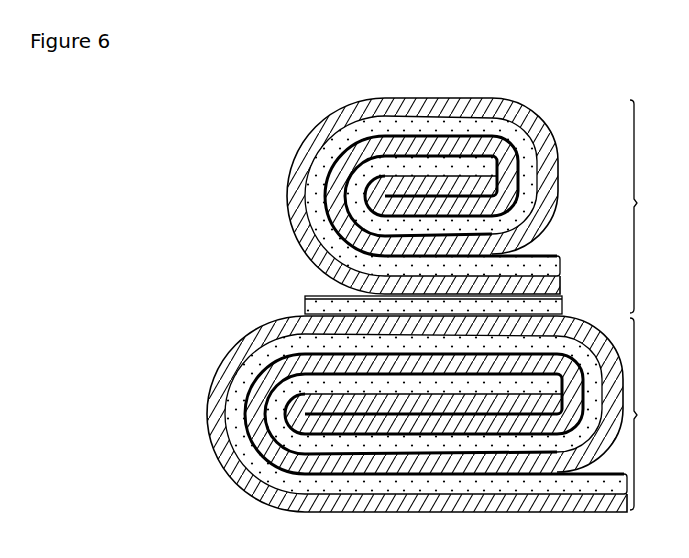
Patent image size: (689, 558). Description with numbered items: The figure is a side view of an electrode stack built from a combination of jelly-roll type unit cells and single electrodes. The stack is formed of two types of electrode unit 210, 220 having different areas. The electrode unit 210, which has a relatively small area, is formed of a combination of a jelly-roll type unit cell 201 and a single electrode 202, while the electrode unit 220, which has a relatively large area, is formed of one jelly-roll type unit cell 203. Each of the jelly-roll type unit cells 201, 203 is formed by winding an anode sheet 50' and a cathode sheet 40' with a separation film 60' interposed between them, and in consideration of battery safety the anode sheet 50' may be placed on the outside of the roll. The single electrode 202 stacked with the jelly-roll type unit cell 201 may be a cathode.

The cathode sheet 40' is at (432, 170).
The anode sheet 50' is at (441, 160).
The separation film 60' is at (423, 179).
The jelly-roll type unit cell 201 is at (381, 179).
The single electrode 202 is at (296, 300).
The jelly-roll type unit cell 203 is at (194, 413).
The electrode unit 210 is at (651, 206).
The electrode unit 220 is at (650, 414).